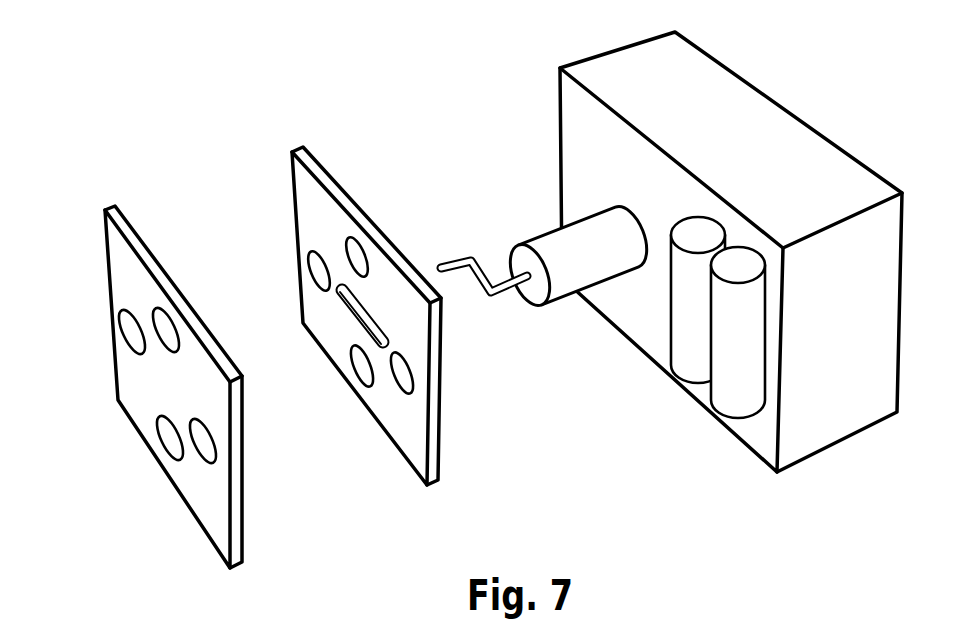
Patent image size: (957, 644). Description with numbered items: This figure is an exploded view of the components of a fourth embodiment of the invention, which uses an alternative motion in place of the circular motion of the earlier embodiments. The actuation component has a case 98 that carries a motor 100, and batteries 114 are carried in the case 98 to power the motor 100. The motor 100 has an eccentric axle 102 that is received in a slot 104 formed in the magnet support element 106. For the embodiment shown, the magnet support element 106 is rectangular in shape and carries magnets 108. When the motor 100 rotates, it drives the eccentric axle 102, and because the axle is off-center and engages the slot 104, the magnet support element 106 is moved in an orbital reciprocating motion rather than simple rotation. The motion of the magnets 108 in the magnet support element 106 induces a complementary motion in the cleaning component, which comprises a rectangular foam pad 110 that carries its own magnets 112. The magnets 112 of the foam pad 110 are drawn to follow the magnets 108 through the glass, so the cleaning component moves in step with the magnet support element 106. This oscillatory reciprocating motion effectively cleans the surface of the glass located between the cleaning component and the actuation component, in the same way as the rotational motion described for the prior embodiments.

The case 98 is at (788, 162).
The motor 100 is at (555, 252).
The eccentric axle 102 is at (482, 293).
The slot 104 is at (380, 348).
The magnet support element 106 is at (322, 200).
The magnets 108 is at (358, 258).
The rectangular foam pad 110 is at (120, 263).
The magnets 112 is at (163, 333).
The batteries 114 is at (733, 388).